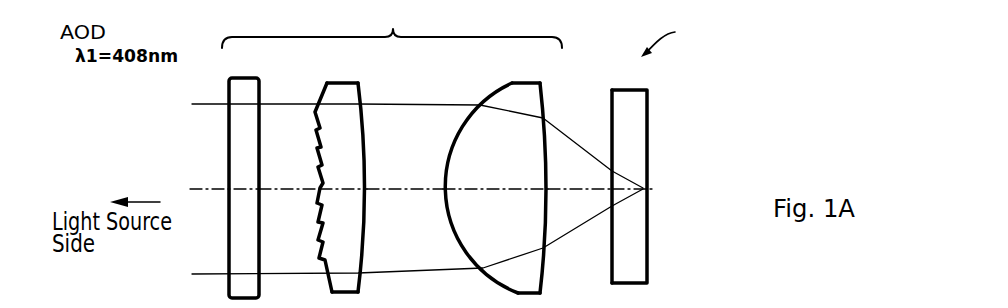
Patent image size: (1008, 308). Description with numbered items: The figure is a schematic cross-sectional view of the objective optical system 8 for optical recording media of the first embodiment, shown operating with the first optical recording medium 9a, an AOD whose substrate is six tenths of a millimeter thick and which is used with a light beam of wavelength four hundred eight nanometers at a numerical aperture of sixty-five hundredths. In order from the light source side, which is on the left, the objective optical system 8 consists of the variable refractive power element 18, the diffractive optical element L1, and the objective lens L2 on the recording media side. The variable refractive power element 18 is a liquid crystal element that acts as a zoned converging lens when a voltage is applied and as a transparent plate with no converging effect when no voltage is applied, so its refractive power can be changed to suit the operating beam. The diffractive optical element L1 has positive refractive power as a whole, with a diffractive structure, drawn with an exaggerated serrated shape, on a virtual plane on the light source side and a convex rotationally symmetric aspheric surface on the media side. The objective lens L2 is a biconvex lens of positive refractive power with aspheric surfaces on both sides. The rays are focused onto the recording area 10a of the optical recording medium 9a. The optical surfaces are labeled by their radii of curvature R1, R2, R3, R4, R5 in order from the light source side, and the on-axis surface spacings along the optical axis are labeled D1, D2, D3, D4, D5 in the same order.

The objective optical system 8 is at (392, 26).
The variable refractive power element 18 is at (250, 78).
The optical recording medium 9a is at (675, 36).
The recording area 10a is at (656, 184).
The diffractive optical element L1 is at (332, 171).
The objective lens L2 is at (508, 166).
The first optical surface radius of curvature R1 is at (317, 195).
The second optical surface radius of curvature R2 is at (367, 217).
The third optical surface radius of curvature R3 is at (443, 200).
The fourth optical surface radius of curvature R4 is at (555, 215).
The fifth optical surface radius of curvature R5 is at (612, 235).
The first on-axis surface spacing D1 is at (318, 185).
The second on-axis surface spacing D2 is at (412, 185).
The third on-axis surface spacing D3 is at (492, 185).
The fourth on-axis surface spacing D4 is at (570, 184).
The fifth on-axis surface spacing D5 is at (630, 183).